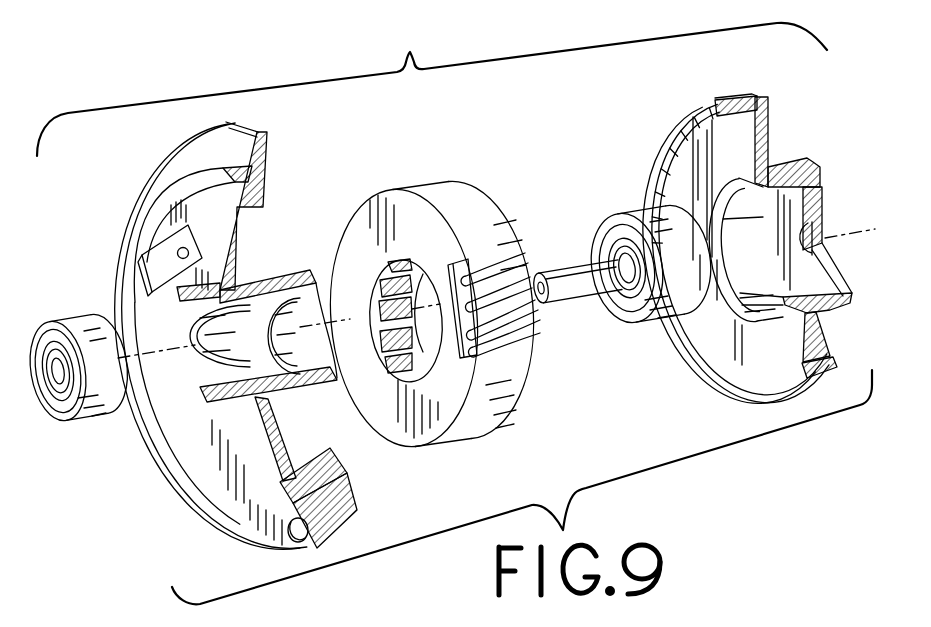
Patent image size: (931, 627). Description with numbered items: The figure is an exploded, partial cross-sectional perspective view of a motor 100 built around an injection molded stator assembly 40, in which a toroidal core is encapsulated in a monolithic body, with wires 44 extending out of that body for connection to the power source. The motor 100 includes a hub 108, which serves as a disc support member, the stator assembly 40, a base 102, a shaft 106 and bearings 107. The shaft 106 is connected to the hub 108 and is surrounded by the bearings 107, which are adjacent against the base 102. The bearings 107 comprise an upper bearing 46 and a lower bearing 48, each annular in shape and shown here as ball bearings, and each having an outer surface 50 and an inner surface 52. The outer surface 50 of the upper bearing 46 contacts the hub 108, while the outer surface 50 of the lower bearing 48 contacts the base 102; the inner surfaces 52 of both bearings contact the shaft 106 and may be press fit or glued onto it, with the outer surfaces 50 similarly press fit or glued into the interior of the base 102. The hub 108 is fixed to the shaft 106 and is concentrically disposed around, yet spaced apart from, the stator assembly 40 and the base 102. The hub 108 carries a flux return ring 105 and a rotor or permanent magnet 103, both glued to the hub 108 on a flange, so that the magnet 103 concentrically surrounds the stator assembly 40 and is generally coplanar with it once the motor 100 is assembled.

The motor 100 is at (454, 313).
The base 102 is at (265, 181).
The magnet 103 is at (721, 239).
The flux return ring 105 is at (717, 100).
The shaft 106 is at (572, 272).
The bearings 107 is at (69, 322).
The hub 108 is at (761, 137).
The stator assembly 40 is at (404, 192).
The wires 44 is at (517, 327).
The upper bearing 46 is at (664, 318).
The lower bearing 48 is at (100, 420).
The outer surface 50 is at (55, 418).
The inner surface 52 is at (58, 378).